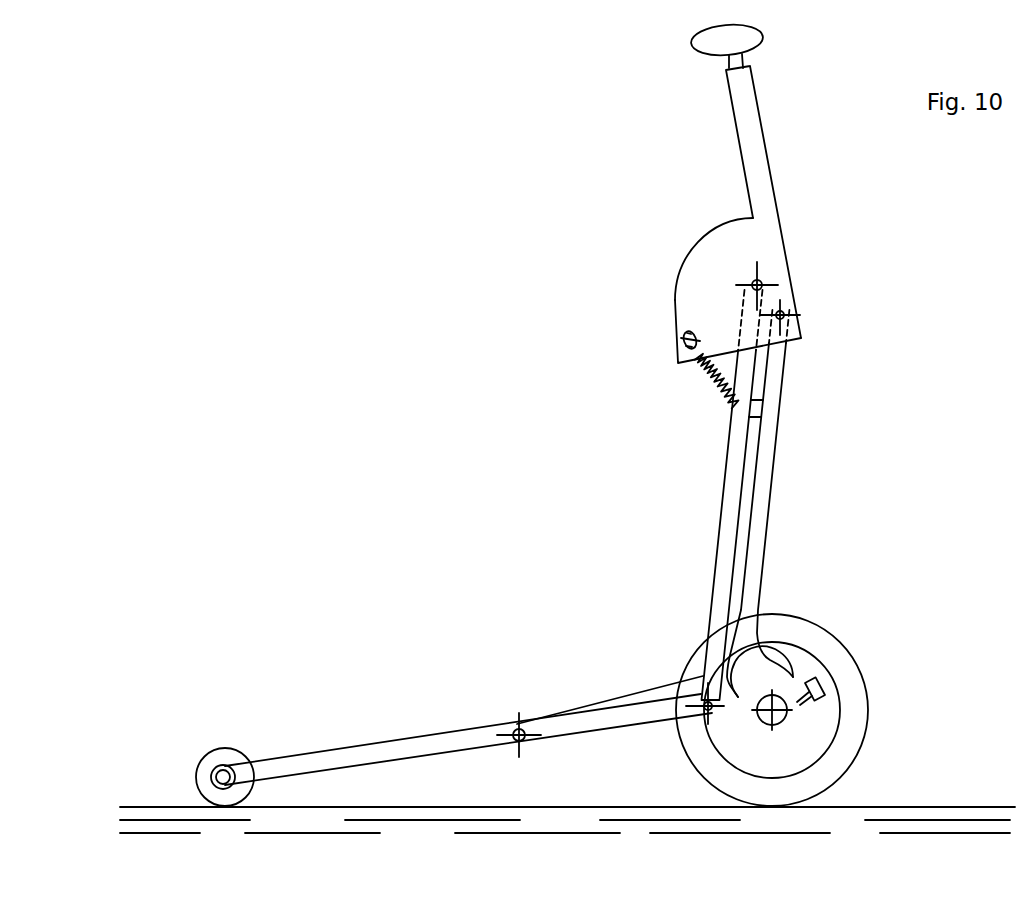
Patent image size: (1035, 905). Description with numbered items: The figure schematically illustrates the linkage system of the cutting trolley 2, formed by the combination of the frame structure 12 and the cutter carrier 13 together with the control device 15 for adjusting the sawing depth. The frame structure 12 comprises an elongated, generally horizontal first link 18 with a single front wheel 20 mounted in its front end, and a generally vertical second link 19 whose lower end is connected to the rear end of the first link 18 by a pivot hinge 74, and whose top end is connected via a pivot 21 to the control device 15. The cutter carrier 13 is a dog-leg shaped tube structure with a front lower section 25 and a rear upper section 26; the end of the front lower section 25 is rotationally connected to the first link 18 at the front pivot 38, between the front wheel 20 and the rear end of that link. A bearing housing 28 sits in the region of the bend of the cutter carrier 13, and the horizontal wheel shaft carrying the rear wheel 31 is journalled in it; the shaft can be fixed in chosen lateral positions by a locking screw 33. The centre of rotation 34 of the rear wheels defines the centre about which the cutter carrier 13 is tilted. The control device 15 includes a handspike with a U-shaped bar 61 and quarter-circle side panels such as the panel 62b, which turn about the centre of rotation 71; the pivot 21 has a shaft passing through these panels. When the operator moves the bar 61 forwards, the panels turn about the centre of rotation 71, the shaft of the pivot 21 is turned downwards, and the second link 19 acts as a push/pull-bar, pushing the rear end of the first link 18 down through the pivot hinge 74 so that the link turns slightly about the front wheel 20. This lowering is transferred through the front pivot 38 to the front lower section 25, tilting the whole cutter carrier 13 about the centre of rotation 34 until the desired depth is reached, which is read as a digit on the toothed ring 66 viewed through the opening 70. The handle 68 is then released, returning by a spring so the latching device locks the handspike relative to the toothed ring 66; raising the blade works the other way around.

The handle 68 is at (696, 41).
The U-shaped bar 61 is at (766, 153).
The control device 15 is at (777, 203).
The side panel 62b is at (716, 272).
The pivot 21 is at (770, 280).
The centre of rotation 71 is at (798, 318).
The opening 70 is at (680, 337).
The toothed ring 66 is at (708, 386).
The second link 19 is at (728, 466).
The rear upper section 26 is at (773, 462).
The cutter carrier 13 is at (715, 557).
The frame structure 12 is at (763, 557).
The cutting trolley 2 is at (856, 463).
The rear wheel 31 is at (828, 638).
The bearing housing 28 is at (795, 720).
The centre of rotation 34 is at (790, 714).
The locking screw 33 is at (835, 680).
The front lower section 25 is at (637, 697).
The first link 18 is at (410, 748).
The front wheel 20 is at (227, 758).
The front pivot 38 is at (516, 748).
The pivot hinge 74 is at (700, 714).